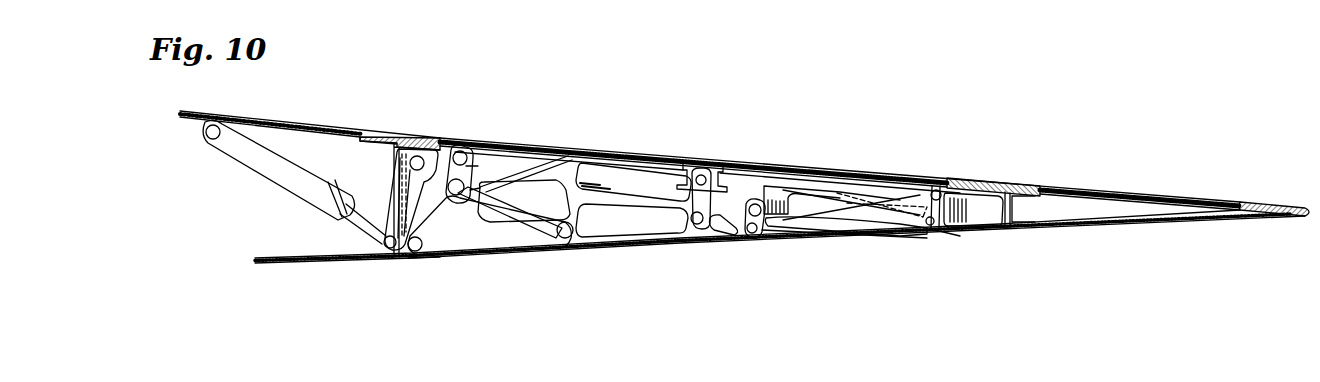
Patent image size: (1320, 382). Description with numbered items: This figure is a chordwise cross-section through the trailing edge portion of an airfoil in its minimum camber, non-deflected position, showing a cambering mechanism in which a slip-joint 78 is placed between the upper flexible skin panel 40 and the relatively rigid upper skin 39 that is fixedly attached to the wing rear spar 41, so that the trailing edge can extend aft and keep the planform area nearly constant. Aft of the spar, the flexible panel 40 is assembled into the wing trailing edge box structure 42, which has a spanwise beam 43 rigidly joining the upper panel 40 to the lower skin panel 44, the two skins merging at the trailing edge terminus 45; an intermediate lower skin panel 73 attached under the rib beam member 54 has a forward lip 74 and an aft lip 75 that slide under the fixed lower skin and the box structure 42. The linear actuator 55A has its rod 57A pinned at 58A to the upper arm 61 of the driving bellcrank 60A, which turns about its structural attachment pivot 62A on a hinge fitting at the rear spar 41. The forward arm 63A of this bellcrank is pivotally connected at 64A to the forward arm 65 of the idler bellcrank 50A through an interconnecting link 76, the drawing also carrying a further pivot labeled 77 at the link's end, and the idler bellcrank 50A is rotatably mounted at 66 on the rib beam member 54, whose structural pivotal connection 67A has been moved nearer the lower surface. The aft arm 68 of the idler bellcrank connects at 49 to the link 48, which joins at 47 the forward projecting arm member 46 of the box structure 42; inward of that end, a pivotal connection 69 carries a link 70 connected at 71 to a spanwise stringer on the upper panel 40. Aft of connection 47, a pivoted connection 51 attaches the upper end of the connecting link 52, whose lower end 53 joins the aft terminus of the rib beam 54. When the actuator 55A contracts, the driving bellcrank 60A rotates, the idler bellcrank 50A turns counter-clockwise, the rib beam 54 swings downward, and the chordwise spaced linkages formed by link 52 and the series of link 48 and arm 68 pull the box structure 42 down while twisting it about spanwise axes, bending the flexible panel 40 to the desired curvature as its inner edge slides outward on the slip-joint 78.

The relatively rigid upper skin 39 is at (297, 116).
The slip-joint 78 is at (414, 134).
The upper flexible skin panel 40 is at (612, 144).
The trailing edge terminus 45 is at (1306, 204).
The lower skin panel 44 is at (1100, 233).
The wing rear spar 41 is at (388, 150).
The driving bellcrank 60A is at (388, 188).
The structural attachment pivot 62A is at (410, 165).
The upper arm 61 is at (398, 205).
The actuator rod pivotal connection 58A is at (384, 243).
The linear actuator 55A is at (270, 182).
The actuator rod 57A is at (326, 208).
The forward arm 63A is at (447, 144).
The bellcrank arm pivotal connection 64A is at (470, 152).
The interconnecting link 76 is at (474, 167).
The link pivot 77 is at (476, 190).
The forward arm 65 is at (489, 225).
The structural pivotal connection 67A is at (420, 252).
The idler bellcrank pivotal attachment 66 is at (568, 240).
The forward edge lip portion 74 is at (414, 262).
The idler bellcrank 50A is at (526, 236).
The rib beam member 54 is at (549, 163).
The aft arm 68 is at (628, 190).
The pivotal connection 69 is at (682, 216).
The link 70 is at (690, 192).
The stringer connection 71 is at (702, 173).
The link 48 is at (752, 204).
The aft arm pivotal connection 49 is at (754, 234).
The forward arm pivotal connection 47 is at (777, 185).
The forward projecting arm member 46 is at (846, 236).
The connecting link 52 is at (910, 176).
The pivoted connection 51 is at (954, 188).
The aft edge lip portion 75 is at (931, 230).
The lower end connection 53 is at (950, 235).
The spanwise beam 43 is at (1012, 209).
The wing trailing edge box structure 42 is at (1098, 217).
The intermediate lower skin panel 73 is at (674, 246).